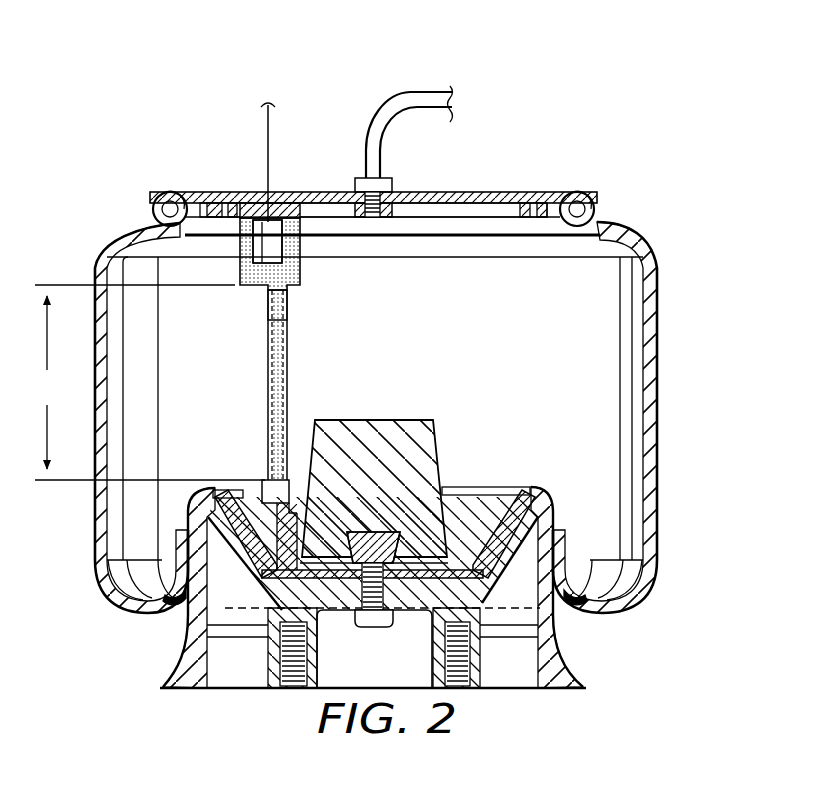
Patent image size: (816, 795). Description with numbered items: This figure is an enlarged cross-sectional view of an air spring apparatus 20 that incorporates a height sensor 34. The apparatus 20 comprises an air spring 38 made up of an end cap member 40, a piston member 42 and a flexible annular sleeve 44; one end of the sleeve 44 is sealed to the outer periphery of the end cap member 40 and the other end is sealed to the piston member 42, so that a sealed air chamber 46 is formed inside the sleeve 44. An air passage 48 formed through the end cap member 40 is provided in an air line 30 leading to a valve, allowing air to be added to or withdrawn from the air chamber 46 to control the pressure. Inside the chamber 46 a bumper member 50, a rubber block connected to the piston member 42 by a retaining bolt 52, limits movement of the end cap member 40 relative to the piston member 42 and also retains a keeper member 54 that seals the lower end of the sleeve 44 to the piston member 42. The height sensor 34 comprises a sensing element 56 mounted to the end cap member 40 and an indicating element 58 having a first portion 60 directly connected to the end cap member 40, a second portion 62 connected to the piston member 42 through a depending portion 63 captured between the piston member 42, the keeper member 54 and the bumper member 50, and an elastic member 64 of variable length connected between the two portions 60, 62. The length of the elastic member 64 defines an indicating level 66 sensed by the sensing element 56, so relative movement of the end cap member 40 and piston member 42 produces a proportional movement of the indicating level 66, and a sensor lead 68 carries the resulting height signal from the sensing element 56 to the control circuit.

The air spring apparatus 20 is at (572, 84).
The air line 30 is at (417, 91).
The height sensor 34 is at (330, 280).
The air spring 38 is at (666, 214).
The end cap member 40 is at (449, 191).
The piston member 42 is at (560, 640).
The flexible annular sleeve 44 is at (658, 535).
The air chamber 46 is at (510, 343).
The air passage 48 is at (370, 218).
The bumper member 50 is at (378, 420).
The retaining bolt 52 is at (378, 628).
The keeper member 54 is at (481, 518).
The sensing element 56 is at (263, 226).
The indicating element 58 is at (304, 306).
The first portion 60 is at (238, 272).
The second portion 62 is at (262, 482).
The depending portion 63 is at (310, 528).
The elastic member 64 is at (266, 392).
The indicating level 66 is at (254, 240).
The sensor lead 68 is at (265, 134).